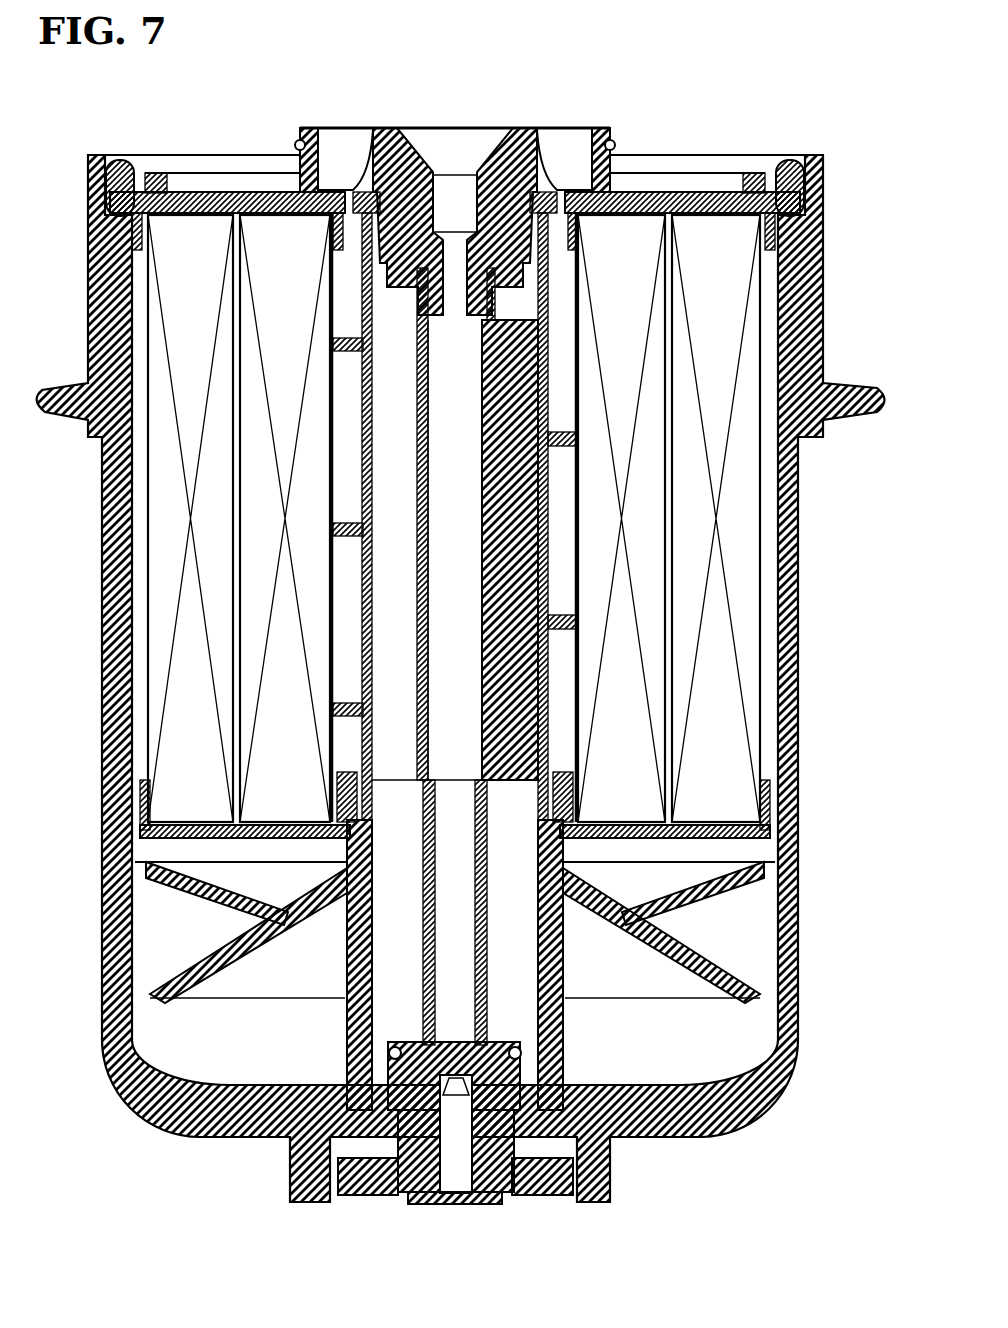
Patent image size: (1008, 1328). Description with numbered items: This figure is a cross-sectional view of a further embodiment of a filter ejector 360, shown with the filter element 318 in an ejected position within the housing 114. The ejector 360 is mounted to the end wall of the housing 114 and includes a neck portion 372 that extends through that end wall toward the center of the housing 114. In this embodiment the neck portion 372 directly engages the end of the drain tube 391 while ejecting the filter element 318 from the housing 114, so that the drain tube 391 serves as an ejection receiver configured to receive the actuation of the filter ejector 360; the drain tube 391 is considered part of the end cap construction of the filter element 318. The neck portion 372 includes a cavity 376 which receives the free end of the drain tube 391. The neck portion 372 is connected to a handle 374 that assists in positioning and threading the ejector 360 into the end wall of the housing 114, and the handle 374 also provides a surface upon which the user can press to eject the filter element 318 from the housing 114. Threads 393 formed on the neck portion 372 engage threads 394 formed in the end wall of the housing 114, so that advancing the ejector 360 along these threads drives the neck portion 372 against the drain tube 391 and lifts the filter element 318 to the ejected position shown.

The housing 114 is at (798, 606).
The filter element 318 is at (768, 492).
The cavity 376 is at (418, 1033).
The threads 393 is at (392, 1060).
The drain tube 391 is at (524, 1052).
The handle 374 is at (373, 1188).
The neck portion 372 is at (475, 1093).
The threads 394 is at (495, 1162).
The filter ejector 360 is at (545, 1170).